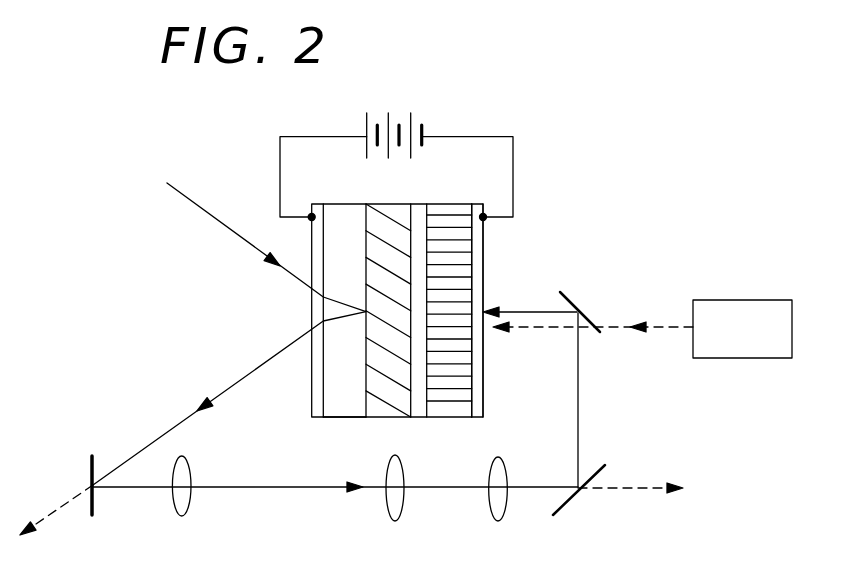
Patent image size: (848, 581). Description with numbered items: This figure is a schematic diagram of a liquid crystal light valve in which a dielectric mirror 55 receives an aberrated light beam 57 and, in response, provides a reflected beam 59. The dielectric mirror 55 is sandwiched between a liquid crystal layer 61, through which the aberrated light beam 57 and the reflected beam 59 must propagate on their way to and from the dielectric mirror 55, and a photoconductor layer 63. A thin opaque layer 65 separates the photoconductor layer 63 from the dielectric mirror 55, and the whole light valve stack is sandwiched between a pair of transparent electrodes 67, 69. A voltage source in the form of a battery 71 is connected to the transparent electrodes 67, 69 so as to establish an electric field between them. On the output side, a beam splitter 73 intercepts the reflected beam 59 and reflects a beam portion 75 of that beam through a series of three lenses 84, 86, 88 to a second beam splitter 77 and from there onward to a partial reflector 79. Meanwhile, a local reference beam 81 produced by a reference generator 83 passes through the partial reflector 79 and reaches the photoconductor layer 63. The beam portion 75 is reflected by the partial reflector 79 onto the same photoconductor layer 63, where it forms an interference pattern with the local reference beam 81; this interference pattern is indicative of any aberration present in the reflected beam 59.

The dielectric mirror 55 is at (383, 419).
The aberrated light beam 57 is at (198, 205).
The reflected beam 59 is at (178, 427).
The liquid crystal layer 61 is at (338, 419).
The photoconductor layer 63 is at (448, 203).
The thin opaque layer 65 is at (415, 419).
The transparent electrode 67 is at (483, 405).
The transparent electrode 69 is at (311, 395).
The battery 71 is at (366, 124).
The beam splitter 73 is at (91, 504).
The beam portion 75 is at (233, 488).
The beam splitter 77 is at (598, 470).
The partial reflector 79 is at (567, 293).
The local reference beam 81 is at (680, 328).
The reference generator 83 is at (757, 360).
The lens 84 is at (180, 517).
The lens 86 is at (393, 522).
The lens 88 is at (500, 522).